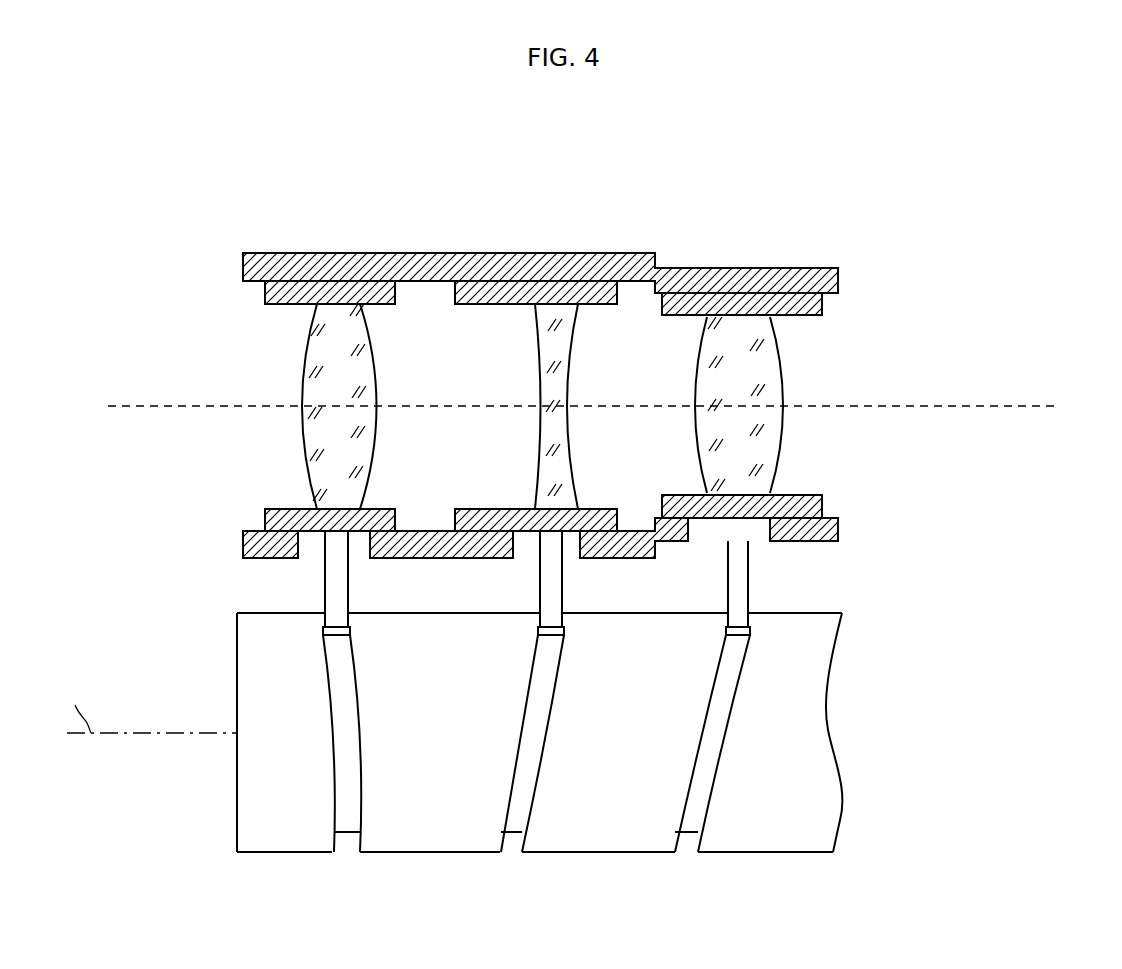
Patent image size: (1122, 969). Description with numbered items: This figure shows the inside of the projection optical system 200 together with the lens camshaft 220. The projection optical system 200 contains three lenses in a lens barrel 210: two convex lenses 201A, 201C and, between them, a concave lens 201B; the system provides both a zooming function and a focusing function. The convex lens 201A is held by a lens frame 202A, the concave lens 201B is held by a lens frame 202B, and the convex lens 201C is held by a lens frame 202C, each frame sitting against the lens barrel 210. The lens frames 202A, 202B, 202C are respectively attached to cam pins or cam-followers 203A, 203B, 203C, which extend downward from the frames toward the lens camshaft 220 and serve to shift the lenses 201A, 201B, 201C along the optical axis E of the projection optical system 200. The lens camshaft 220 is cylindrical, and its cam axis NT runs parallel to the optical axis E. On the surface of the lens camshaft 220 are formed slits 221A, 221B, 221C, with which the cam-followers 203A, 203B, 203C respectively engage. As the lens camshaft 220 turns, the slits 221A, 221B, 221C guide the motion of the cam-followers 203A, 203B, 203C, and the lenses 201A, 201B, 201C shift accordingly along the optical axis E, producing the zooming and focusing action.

The projection optical system 200 is at (823, 247).
The lens barrel 210 is at (750, 268).
The lens frame 202A is at (285, 304).
The lens frame 202B is at (492, 304).
The lens frame 202C is at (803, 317).
The convex lens 201A is at (378, 432).
The concave lens 201B is at (563, 432).
The convex lens 201C is at (786, 432).
The cam-follower 203A is at (348, 583).
The cam-follower 203B is at (562, 583).
The cam-follower 203C is at (748, 576).
The lens camshaft 220 is at (812, 676).
The slit 221A is at (347, 840).
The slit 221B is at (510, 840).
The slit 221C is at (686, 840).